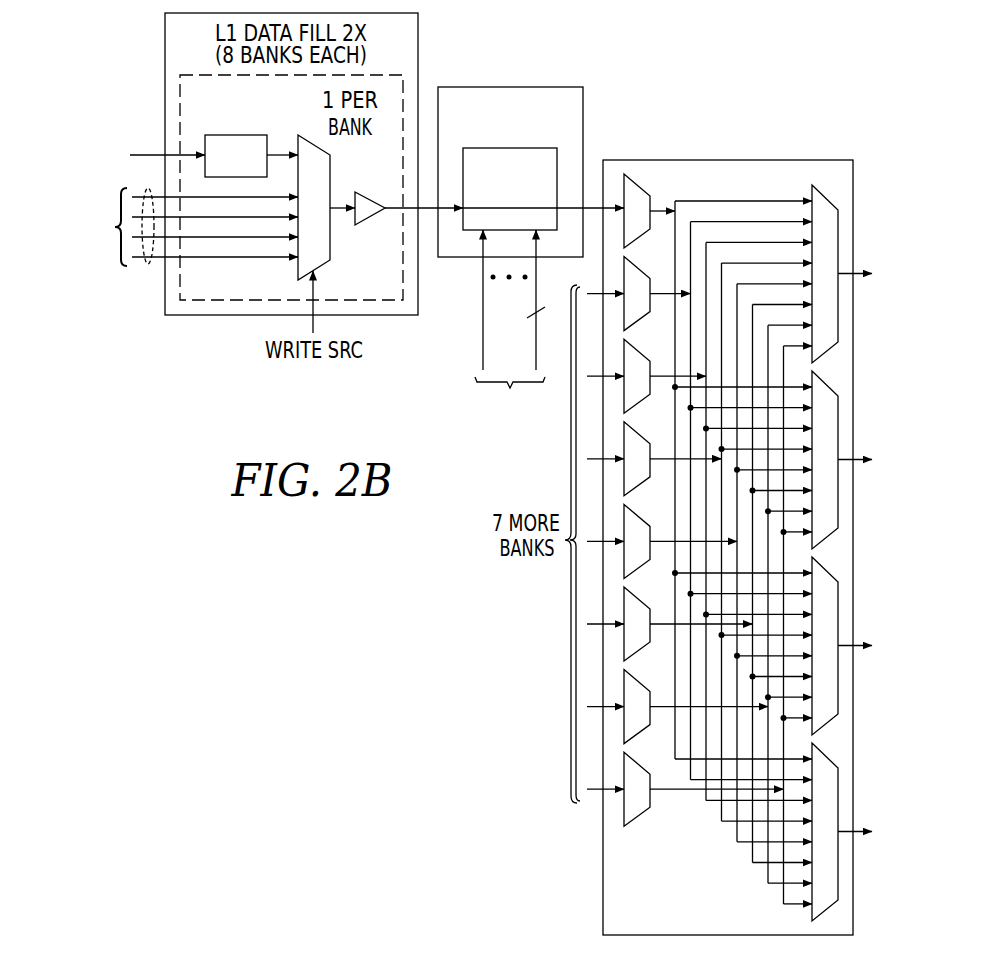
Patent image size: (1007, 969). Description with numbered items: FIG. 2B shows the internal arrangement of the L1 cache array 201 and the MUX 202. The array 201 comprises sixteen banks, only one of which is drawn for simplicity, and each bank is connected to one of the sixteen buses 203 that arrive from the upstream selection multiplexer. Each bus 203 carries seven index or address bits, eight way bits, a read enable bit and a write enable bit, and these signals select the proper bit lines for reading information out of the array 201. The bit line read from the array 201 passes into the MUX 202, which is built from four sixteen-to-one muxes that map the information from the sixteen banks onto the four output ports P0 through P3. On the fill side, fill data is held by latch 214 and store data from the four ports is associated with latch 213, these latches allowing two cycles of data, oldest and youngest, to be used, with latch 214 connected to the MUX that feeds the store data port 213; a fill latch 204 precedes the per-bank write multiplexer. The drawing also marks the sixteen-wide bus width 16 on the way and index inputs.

The array 201 is at (512, 87).
The MUX 202 is at (727, 160).
The bus 203 is at (482, 342).
The fill data latch 204 is at (237, 135).
The latch 213 is at (145, 267).
The latch 214 is at (148, 155).
The 16-bit bus width indicator 16 is at (527, 304).